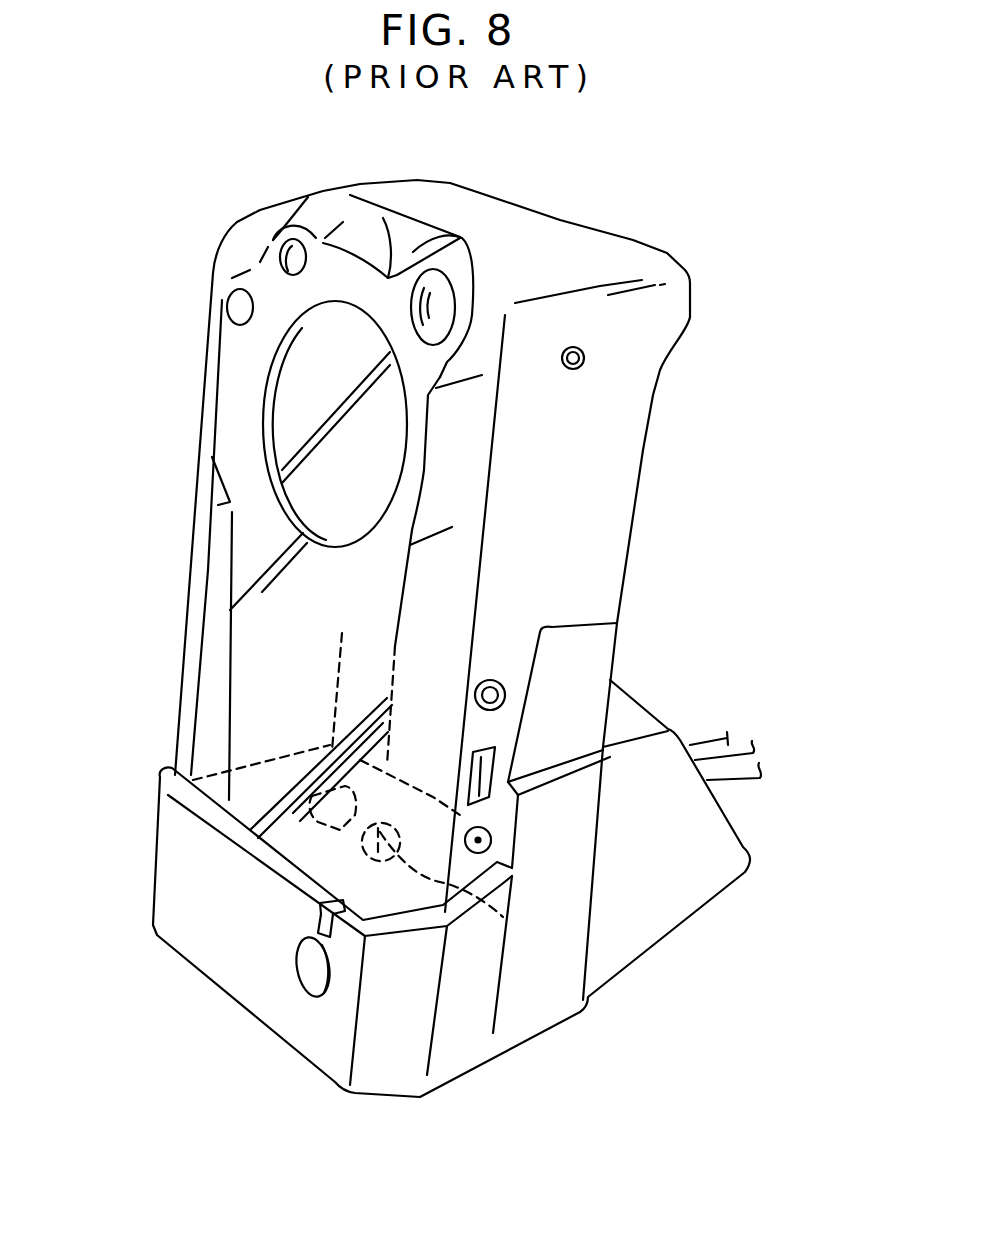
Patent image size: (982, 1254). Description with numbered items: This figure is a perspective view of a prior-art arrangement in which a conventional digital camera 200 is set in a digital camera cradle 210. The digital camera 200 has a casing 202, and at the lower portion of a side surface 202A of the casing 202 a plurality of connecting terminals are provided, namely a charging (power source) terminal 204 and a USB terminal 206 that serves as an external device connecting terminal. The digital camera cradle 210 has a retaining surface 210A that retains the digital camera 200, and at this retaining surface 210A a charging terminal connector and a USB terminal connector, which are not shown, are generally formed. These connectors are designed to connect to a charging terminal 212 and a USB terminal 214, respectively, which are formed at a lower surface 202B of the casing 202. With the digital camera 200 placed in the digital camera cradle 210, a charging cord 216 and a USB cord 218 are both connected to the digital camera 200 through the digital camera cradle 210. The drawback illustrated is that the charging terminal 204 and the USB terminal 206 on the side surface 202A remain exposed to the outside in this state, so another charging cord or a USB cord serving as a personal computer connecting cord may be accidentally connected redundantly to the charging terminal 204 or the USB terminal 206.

The digital camera 200 is at (616, 218).
The casing 202 is at (518, 246).
The side surface 202A is at (613, 522).
The lower surface 202B is at (300, 801).
The charging terminal 204 is at (475, 818).
The USB terminal 206 is at (492, 750).
The digital camera cradle 210 is at (563, 1028).
The retaining surface 210A is at (258, 855).
The charging terminal 212 is at (502, 917).
The USB terminal 214 is at (312, 762).
The charging cord 216 is at (720, 745).
The USB cord 218 is at (740, 778).